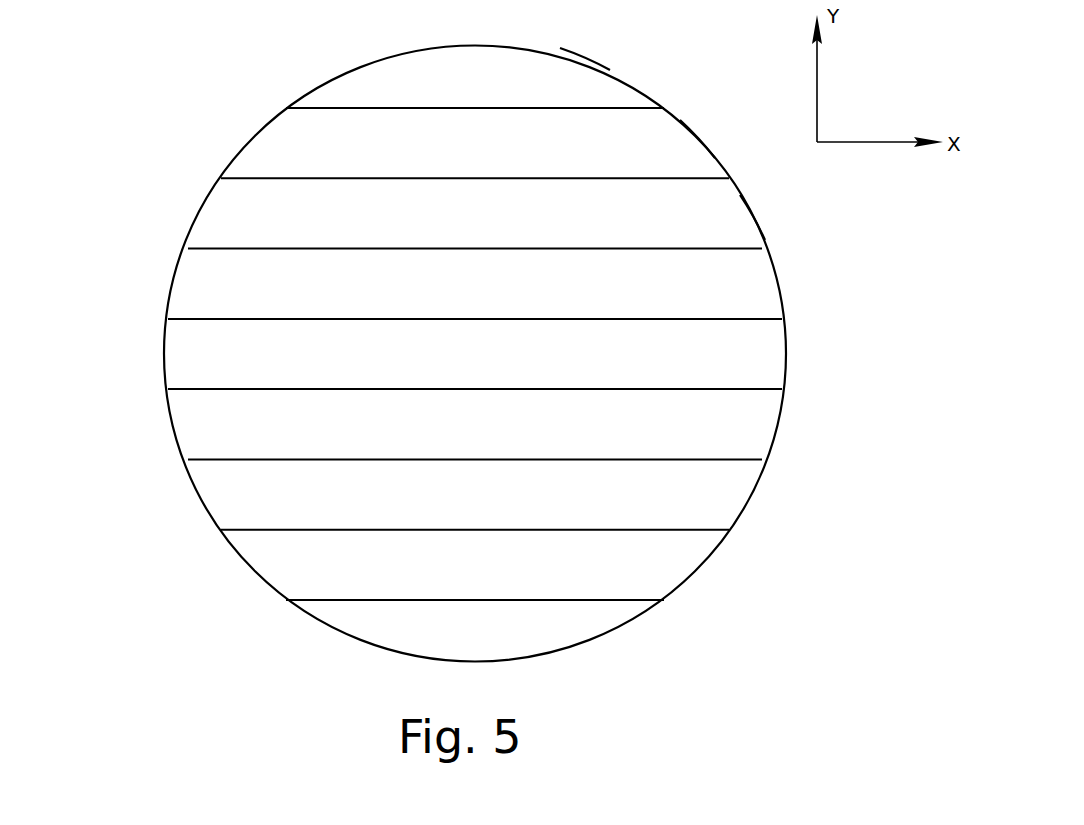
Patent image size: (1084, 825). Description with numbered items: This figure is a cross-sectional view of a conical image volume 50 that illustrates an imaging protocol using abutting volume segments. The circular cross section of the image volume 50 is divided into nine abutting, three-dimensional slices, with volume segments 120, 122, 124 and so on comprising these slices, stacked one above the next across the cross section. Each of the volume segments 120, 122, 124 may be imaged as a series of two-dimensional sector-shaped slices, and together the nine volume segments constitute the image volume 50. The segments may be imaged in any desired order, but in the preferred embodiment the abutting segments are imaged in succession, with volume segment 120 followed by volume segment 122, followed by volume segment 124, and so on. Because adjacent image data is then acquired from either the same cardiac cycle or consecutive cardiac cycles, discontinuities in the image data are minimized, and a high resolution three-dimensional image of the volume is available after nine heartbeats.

The conical image volume 50 is at (153, 273).
The volume segment 120 is at (585, 61).
The volume segment 122 is at (698, 137).
The volume segment 124 is at (756, 217).